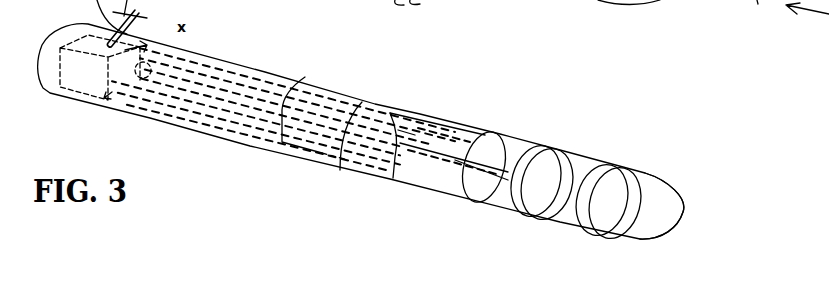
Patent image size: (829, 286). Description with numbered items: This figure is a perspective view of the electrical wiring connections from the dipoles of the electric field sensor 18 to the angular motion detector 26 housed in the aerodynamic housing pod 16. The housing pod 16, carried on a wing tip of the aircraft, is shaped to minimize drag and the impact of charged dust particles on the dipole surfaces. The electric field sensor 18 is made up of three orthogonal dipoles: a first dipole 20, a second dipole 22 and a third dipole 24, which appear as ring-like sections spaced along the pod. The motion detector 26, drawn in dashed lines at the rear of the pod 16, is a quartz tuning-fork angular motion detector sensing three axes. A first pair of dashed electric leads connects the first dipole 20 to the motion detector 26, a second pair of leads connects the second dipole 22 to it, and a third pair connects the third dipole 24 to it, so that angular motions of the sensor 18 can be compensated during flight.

The aerodynamic housing pod 16 is at (669, 194).
The electric field sensor 18 is at (489, 103).
The first dipole 20 is at (343, 170).
The second dipole 22 is at (490, 165).
The third dipole 24 is at (607, 160).
The angular motion detector 26 is at (87, 80).